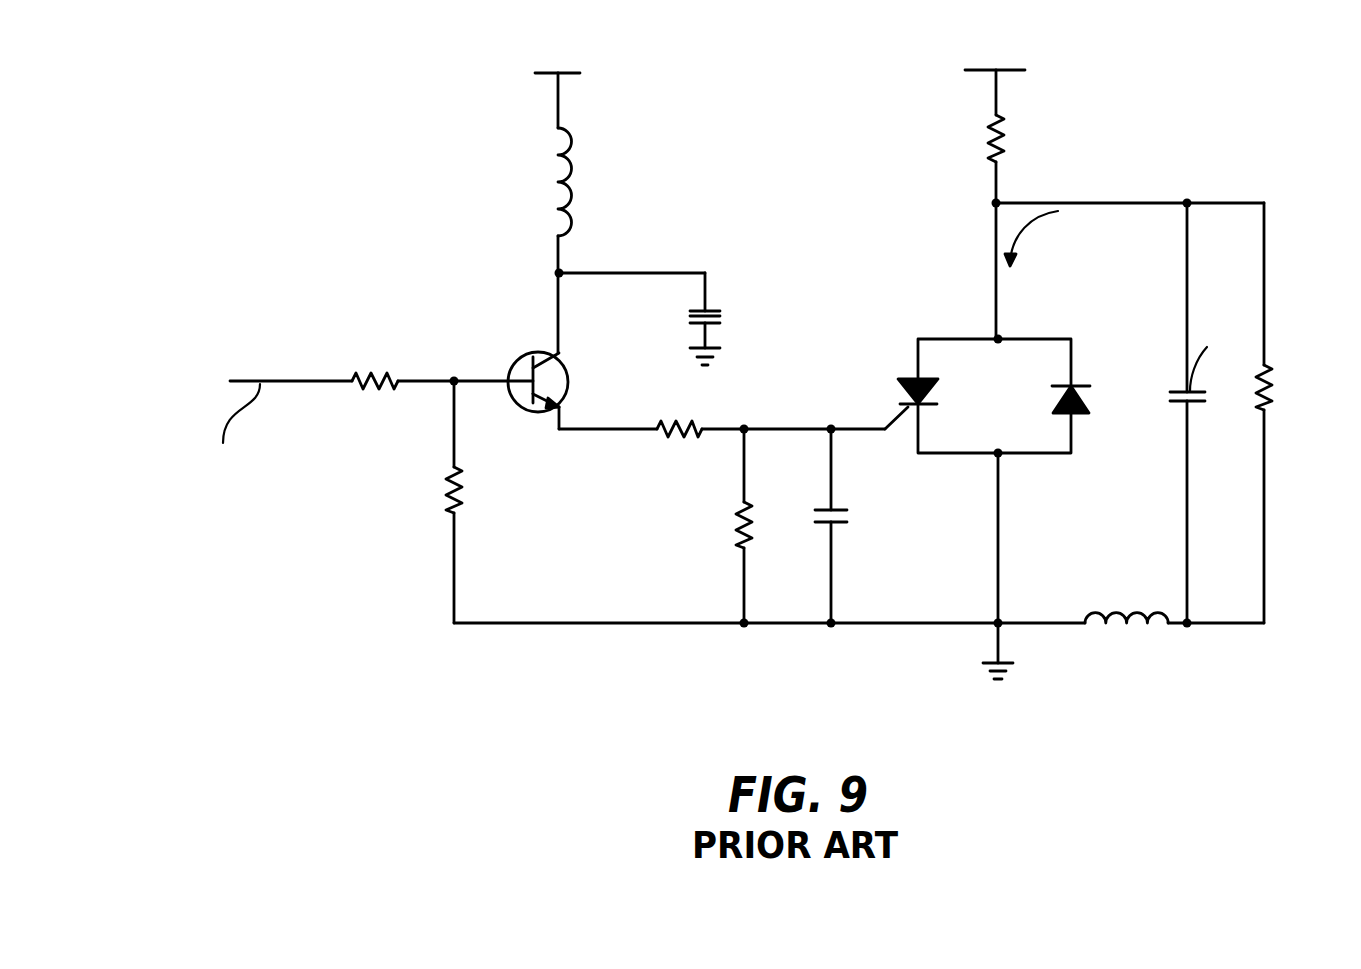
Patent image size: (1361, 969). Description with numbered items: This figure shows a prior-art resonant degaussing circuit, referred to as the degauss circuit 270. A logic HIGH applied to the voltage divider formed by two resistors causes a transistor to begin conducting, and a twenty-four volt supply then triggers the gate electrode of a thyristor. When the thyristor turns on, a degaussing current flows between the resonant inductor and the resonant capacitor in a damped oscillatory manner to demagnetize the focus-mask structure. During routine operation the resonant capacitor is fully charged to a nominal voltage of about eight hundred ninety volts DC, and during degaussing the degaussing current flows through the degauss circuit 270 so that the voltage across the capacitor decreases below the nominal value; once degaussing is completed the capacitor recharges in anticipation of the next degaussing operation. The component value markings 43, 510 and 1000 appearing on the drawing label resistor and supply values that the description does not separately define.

The degauss circuit 270 is at (812, 35).
The 43 ohm resistors 43 is at (720, 522).
The resistor R7, 510 ohm 510 is at (375, 348).
The +1000 V supply 1000 is at (993, 99).